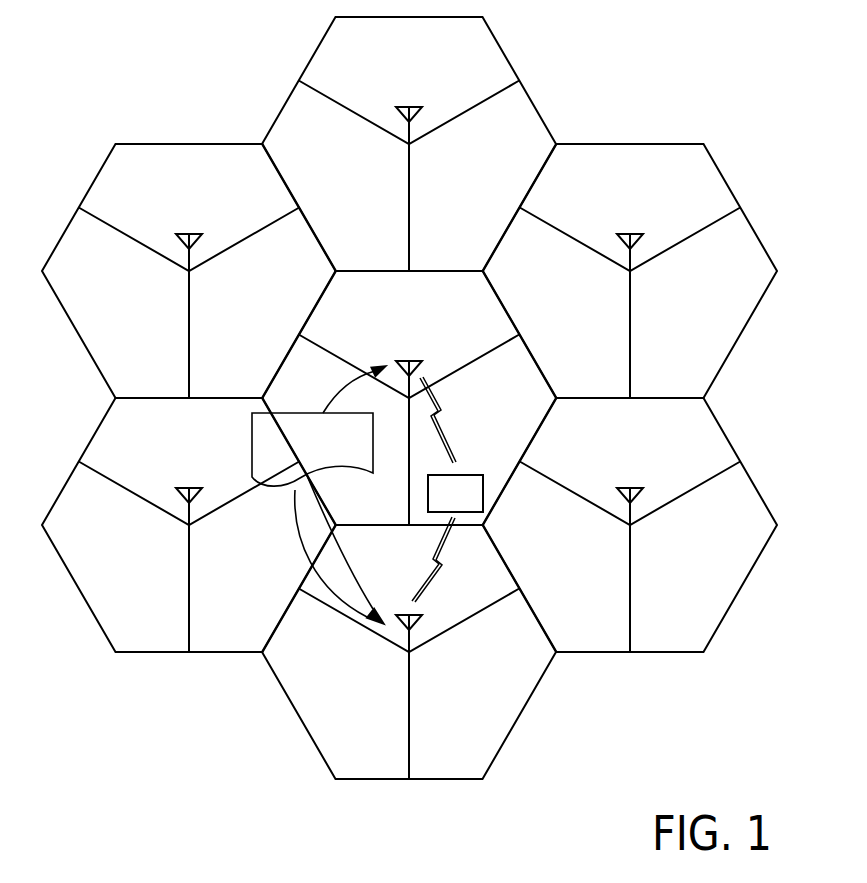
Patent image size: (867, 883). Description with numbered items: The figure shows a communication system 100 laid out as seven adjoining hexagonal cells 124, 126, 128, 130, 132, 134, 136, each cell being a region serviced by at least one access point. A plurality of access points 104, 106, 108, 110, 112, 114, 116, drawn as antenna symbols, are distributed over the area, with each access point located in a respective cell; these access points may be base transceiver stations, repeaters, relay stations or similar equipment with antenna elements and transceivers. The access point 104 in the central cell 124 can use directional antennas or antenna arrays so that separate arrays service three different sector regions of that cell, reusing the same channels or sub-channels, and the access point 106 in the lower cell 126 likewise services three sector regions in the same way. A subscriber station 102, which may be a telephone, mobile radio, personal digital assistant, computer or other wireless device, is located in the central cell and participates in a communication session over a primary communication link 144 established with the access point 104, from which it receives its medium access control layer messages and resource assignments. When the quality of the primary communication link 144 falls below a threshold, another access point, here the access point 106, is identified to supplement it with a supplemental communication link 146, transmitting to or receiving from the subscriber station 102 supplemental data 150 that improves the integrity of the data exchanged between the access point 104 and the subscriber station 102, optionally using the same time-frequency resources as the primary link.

The communication system 100 is at (155, 60).
The subscriber station 102 is at (483, 492).
The access point 104 is at (413, 361).
The access point 106 is at (404, 631).
The access point 108 is at (405, 107).
The access point 110 is at (185, 234).
The access point 112 is at (184, 502).
The access point 114 is at (626, 234).
The access point 116 is at (627, 488).
The cell 124 is at (373, 306).
The cell 126 is at (505, 682).
The cell 128 is at (468, 80).
The cell 130 is at (247, 198).
The cell 132 is at (170, 446).
The cell 134 is at (695, 194).
The cell 136 is at (700, 462).
The primary communication link 144 is at (446, 422).
The supplemental communication link 146 is at (434, 578).
The supplemental data 150 is at (319, 495).